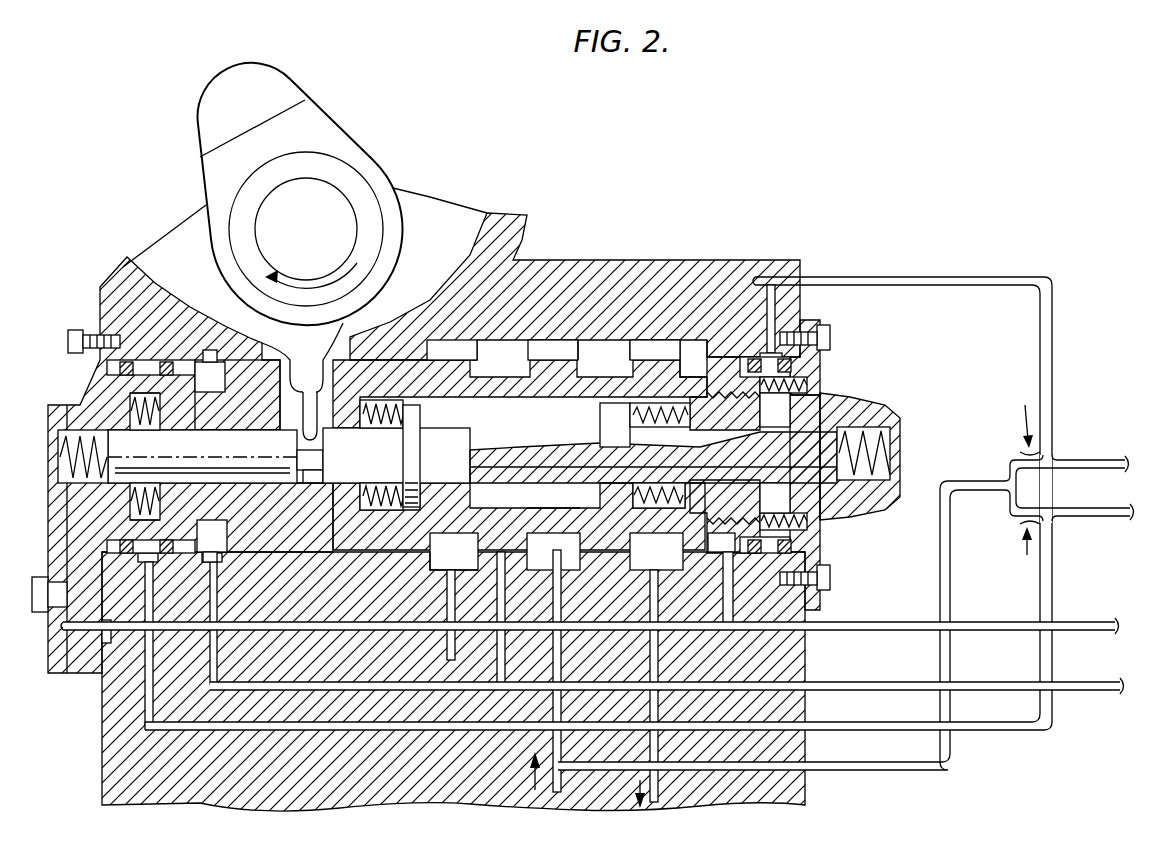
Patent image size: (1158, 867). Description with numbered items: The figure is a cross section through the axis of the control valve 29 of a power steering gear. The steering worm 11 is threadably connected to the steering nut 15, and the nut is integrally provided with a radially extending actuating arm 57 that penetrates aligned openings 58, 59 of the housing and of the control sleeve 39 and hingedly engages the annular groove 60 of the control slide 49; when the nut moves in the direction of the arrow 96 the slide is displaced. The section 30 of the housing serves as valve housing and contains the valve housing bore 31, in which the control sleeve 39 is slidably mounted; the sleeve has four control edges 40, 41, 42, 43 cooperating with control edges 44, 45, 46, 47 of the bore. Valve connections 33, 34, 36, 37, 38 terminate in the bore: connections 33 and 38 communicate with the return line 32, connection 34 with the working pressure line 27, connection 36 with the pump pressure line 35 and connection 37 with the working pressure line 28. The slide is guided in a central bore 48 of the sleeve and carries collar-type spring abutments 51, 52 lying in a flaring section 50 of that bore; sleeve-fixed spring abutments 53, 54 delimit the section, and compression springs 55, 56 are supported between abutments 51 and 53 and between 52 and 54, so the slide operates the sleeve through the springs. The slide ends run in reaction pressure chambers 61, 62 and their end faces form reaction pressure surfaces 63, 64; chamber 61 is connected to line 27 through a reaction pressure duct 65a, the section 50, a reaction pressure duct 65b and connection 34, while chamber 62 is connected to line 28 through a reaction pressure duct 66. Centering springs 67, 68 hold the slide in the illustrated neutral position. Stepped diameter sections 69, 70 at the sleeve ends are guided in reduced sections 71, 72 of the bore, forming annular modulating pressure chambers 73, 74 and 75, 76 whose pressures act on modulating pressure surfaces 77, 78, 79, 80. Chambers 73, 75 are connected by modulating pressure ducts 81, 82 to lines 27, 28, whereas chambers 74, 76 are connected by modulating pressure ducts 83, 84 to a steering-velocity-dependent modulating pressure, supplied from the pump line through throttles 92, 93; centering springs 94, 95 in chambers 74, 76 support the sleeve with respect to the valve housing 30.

The steering nut 15 is at (326, 113).
The steering worm 11 is at (316, 190).
The arrow 96 is at (346, 272).
The opening of the housing 58 is at (280, 355).
The opening of the control sleeve 59 is at (312, 388).
The control valve 29 is at (598, 272).
The valve housing 30 is at (678, 262).
The control sleeve 39 is at (554, 348).
The control edge 43 is at (484, 343).
The control edge 42 is at (520, 350).
The control edge 41 is at (592, 352).
The control edge 40 is at (612, 352).
The valve housing bore 31 is at (735, 362).
The modulating pressure duct 84 is at (779, 312).
The centering spring 95 is at (808, 386).
The reduced section of the valve housing bore 71 is at (790, 416).
The centering spring 67 is at (890, 444).
The reaction pressure chamber 61 is at (888, 474).
The reaction pressure surface 63 is at (850, 485).
The modulating pressure chamber 76 is at (790, 494).
The modulating pressure surface 80 is at (768, 462).
The throttle 93 is at (1069, 451).
The modulating pressure duct 83 is at (143, 690).
The throttle 92 is at (1028, 552).
The pump pressure line 35 is at (563, 778).
The working pressure line 28 is at (1084, 622).
The working pressure line 27 is at (1084, 682).
The modulating pressure duct 82 is at (735, 611).
The modulating pressure chamber 75 is at (733, 562).
The modulating pressure surface 79 is at (719, 556).
The stepped diameter section 69 is at (708, 530).
The spring abutment 53 is at (675, 512).
The valve connection 37 is at (576, 535).
The valve connection 36 is at (538, 558).
The valve connection 34 is at (468, 556).
The valve connection 33 is at (445, 584).
The control edge of the valve housing bore 47 is at (460, 562).
The control edge of the valve housing bore 46 is at (545, 565).
The control edge of the valve housing bore 45 is at (568, 562).
The control edge of the valve housing bore 44 is at (643, 568).
The valve connection 38 is at (660, 668).
The return line 32 is at (664, 788).
The modulating pressure duct 81 is at (220, 666).
The reaction pressure duct 66 is at (55, 542).
The centering spring 68 is at (58, 456).
The reaction pressure chamber 62 is at (118, 424).
The modulating pressure surface 78 is at (152, 410).
The stepped diameter section 70 is at (188, 370).
The reduced section of the valve housing bore 72 is at (158, 411).
The modulating pressure chamber 73 is at (224, 379).
The actuating arm 57 is at (278, 422).
The modulating pressure chamber 74 is at (158, 484).
The centering spring 94 is at (163, 502).
The reaction pressure surface 64 is at (88, 488).
The control slide 49 is at (243, 482).
The central bore 48 is at (303, 485).
The annular groove 60 is at (322, 467).
The spring abutment 52 is at (411, 443).
The spring abutment 54 is at (375, 406).
The flaring section of the central bore 50 is at (428, 503).
The compression spring 56 is at (375, 520).
The modulating pressure surface 77 is at (226, 552).
The reaction pressure duct 65a is at (486, 442).
The reaction pressure duct 65b is at (507, 506).
The spring abutment 51 is at (602, 415).
The compression spring 55 is at (681, 398).